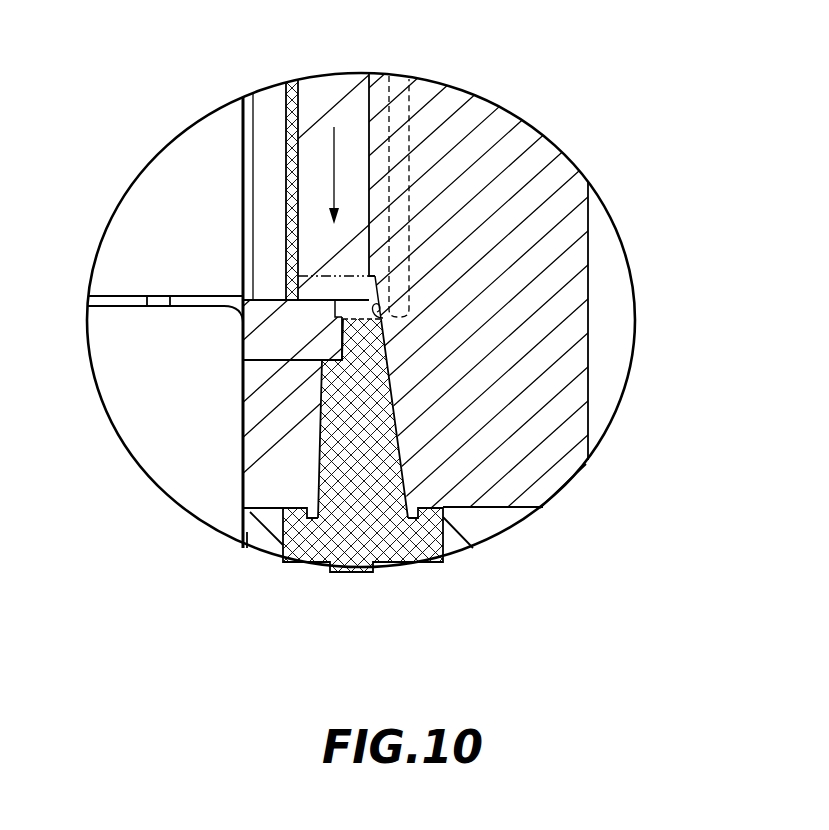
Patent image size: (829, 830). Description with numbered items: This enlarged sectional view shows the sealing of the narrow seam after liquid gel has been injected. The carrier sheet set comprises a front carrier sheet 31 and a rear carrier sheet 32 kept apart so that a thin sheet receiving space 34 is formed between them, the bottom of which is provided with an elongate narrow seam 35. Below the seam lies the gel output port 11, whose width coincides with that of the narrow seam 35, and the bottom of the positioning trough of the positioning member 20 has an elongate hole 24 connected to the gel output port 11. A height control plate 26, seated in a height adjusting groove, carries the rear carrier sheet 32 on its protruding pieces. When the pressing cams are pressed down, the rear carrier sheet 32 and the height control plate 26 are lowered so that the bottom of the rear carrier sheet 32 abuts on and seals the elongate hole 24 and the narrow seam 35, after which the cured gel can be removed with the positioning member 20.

The gel output port 11 is at (351, 567).
The positioning member 20 is at (557, 137).
The elongate hole 24 is at (383, 318).
The height control plate 26 is at (412, 137).
The front carrier sheet 31 is at (262, 110).
The rear carrier sheet 32 is at (345, 90).
The thin sheet receiving space 34 is at (288, 82).
The elongate narrow seam 35 is at (340, 316).